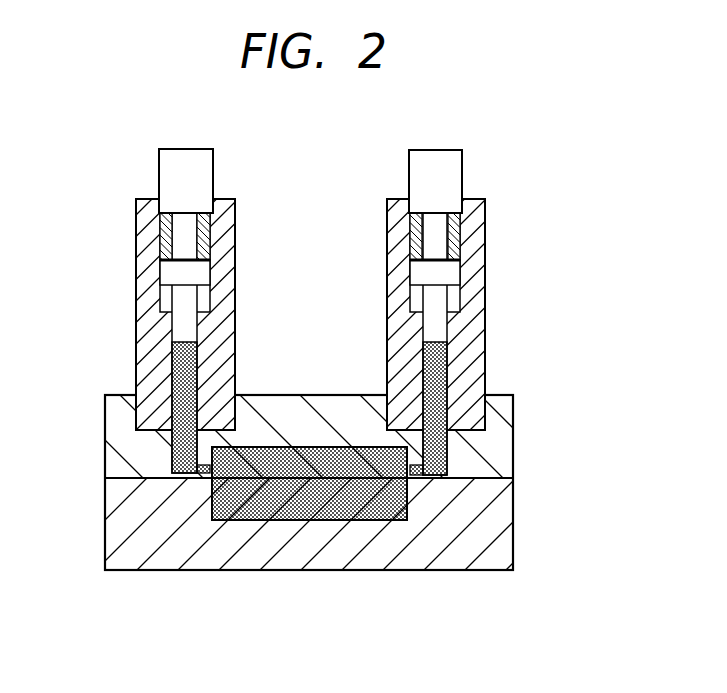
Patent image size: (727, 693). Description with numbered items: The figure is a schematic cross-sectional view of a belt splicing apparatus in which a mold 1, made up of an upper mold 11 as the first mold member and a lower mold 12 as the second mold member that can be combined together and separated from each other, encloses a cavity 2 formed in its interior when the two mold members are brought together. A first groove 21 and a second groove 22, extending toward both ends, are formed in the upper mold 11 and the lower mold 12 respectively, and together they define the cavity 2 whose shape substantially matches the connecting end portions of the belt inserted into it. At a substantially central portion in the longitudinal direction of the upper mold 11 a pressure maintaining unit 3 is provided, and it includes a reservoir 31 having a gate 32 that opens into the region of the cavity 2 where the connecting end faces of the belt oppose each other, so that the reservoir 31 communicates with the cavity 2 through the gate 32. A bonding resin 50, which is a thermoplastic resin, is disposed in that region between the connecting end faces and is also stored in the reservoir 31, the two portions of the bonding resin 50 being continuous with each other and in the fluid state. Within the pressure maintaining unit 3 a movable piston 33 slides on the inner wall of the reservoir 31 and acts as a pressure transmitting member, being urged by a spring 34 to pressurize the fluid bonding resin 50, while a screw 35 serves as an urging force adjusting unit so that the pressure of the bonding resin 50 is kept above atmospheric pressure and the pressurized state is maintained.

The mold 1 is at (383, 482).
The upper mold 11 is at (513, 440).
The lower mold 12 is at (356, 524).
The cavity 2 is at (278, 470).
The first groove 21 is at (214, 503).
The second groove 22 is at (337, 522).
The pressure maintaining unit 3 is at (485, 297).
The reservoir 31 is at (442, 372).
The gate 32 is at (418, 478).
The movable piston 33 is at (420, 297).
The spring 34 is at (417, 238).
The screw 35 is at (450, 178).
The bonding resin 50 is at (450, 371).